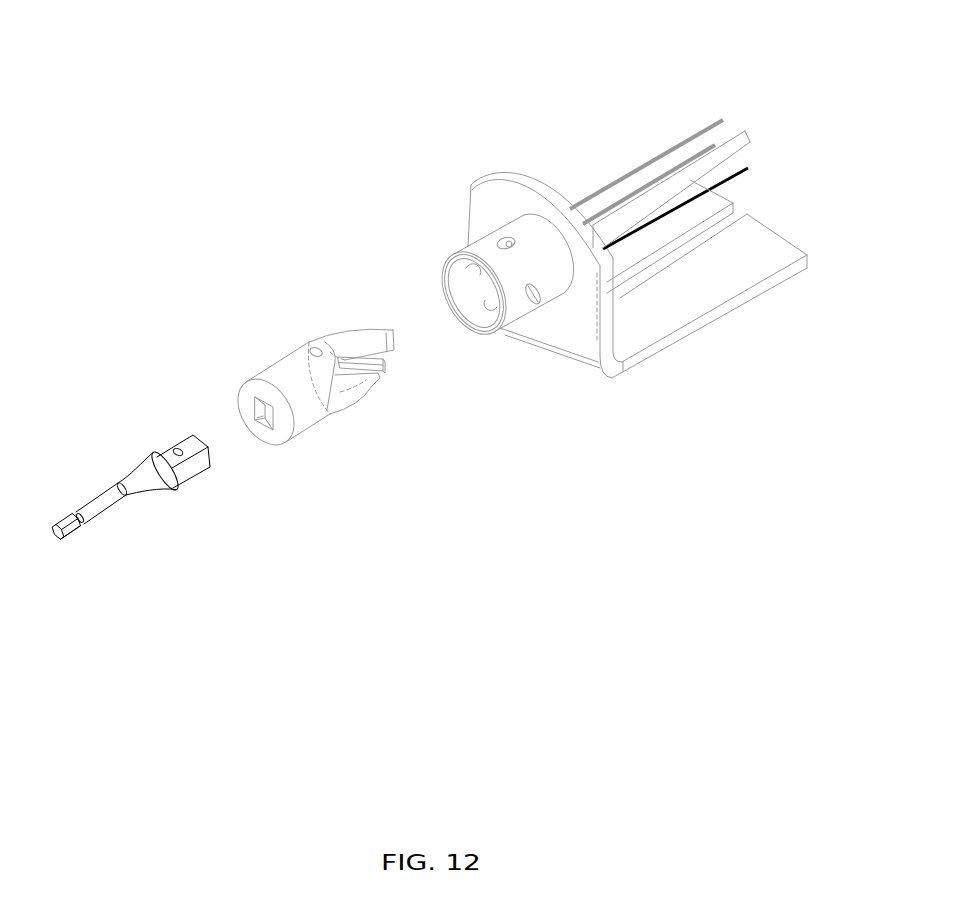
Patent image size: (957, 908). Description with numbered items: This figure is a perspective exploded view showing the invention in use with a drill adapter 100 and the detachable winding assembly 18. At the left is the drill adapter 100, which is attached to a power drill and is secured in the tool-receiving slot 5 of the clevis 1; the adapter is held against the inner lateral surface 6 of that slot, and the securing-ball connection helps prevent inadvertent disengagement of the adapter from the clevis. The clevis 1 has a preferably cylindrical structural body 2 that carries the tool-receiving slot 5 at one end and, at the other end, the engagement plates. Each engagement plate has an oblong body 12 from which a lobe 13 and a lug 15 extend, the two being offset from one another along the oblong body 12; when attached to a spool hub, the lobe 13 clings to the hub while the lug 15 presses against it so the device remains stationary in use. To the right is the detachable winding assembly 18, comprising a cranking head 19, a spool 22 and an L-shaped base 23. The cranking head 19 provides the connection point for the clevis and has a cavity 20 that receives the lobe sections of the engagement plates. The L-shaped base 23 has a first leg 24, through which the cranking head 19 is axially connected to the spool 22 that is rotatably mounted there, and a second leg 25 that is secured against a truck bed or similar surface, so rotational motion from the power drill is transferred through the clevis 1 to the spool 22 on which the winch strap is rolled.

The drill adapter 100 is at (136, 433).
The clevis 1 is at (259, 344).
The structural body 2 is at (310, 430).
The tool-receiving slot 5 is at (260, 422).
The inner lateral surface 6 is at (257, 408).
The oblong body 12 is at (350, 400).
The lobe 13 is at (399, 336).
The lug 15 is at (394, 372).
The detachable winding assembly 18 is at (669, 64).
The cranking head 19 is at (460, 247).
The cavity 20 is at (476, 326).
The spool 22 is at (744, 186).
The L-shaped base 23 is at (751, 341).
The first leg 24 is at (490, 178).
The second leg 25 is at (659, 352).